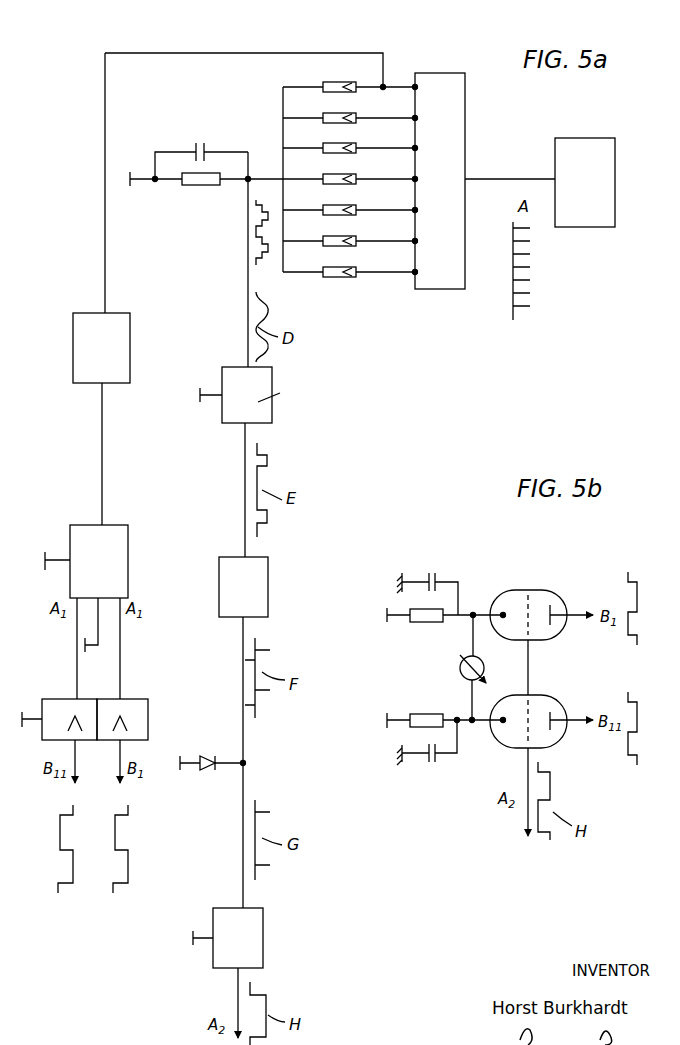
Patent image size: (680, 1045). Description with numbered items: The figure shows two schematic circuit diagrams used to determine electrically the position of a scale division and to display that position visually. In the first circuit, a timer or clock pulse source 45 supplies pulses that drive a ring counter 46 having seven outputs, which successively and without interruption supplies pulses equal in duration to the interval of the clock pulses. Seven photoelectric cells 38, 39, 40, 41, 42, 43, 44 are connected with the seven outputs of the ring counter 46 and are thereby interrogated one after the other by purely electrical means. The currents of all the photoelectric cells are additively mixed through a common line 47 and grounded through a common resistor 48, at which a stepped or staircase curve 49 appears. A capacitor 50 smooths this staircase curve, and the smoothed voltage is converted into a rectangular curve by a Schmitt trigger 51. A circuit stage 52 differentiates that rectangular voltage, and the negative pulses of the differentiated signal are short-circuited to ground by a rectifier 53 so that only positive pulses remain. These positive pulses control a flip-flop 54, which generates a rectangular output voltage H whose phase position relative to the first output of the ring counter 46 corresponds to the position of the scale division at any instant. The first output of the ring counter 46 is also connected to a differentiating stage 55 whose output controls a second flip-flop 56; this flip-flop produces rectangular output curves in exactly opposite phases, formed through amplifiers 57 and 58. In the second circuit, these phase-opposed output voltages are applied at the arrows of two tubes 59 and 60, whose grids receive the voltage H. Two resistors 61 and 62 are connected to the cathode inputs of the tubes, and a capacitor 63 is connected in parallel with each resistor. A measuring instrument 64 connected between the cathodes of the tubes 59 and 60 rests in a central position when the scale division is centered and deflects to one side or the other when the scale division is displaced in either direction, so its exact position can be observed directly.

In FIG. 5a, the photoelectric cell 38 is at (349, 70).
In FIG. 5a, the photoelectric cell 39 is at (349, 101).
In FIG. 5a, the photoelectric cell 40 is at (340, 143).
In FIG. 5a, the photoelectric cell 41 is at (340, 174).
In FIG. 5a, the photoelectric cell 42 is at (340, 205).
In FIG. 5a, the photoelectric cell 43 is at (340, 236).
In FIG. 5a, the photoelectric cell 44 is at (340, 267).
In FIG. 5a, the clock pulse source 45 is at (585, 220).
In FIG. 5a, the ring counter 46 is at (446, 283).
In FIG. 5a, the common line 47 is at (283, 128).
In FIG. 5a, the common resistor 48 is at (183, 185).
In FIG. 5a, the staircase curve 49 is at (256, 234).
In FIG. 5a, the capacitor 50 is at (196, 146).
In FIG. 5a, the Schmitt trigger 51 is at (222, 411).
In FIG. 5a, the differentiating circuit stage 52 is at (219, 593).
In FIG. 5a, the rectifier 53 is at (210, 776).
In FIG. 5a, the flip-flop 54 is at (215, 955).
In FIG. 5a, the differentiating stage 55 is at (125, 340).
In FIG. 5a, the flip-flop 56 is at (125, 555).
In FIG. 5a, the amplifier 57 is at (135, 700).
In FIG. 5a, the amplifier 58 is at (62, 700).
In FIG. 5b, the tube 59 is at (555, 632).
In FIG. 5b, the tube 60 is at (553, 735).
In FIG. 5b, the resistor 61 is at (415, 628).
In FIG. 5b, the resistor 62 is at (413, 712).
In FIG. 5b, the capacitor 63 is at (437, 570).
In FIG. 5b, the measuring instrument 64 is at (484, 664).